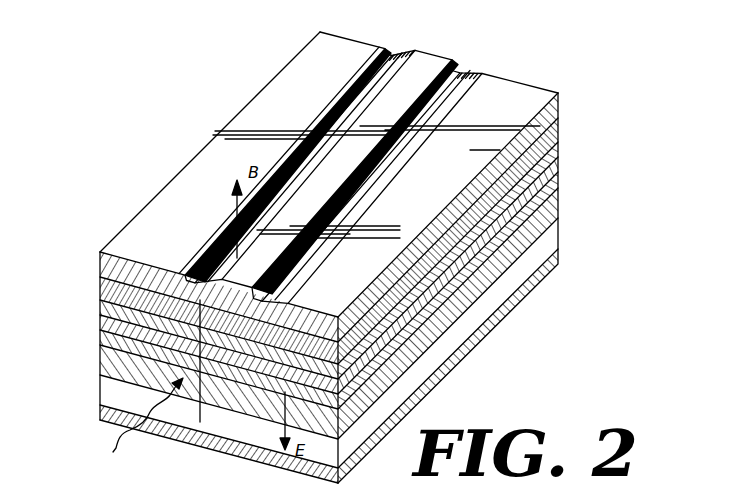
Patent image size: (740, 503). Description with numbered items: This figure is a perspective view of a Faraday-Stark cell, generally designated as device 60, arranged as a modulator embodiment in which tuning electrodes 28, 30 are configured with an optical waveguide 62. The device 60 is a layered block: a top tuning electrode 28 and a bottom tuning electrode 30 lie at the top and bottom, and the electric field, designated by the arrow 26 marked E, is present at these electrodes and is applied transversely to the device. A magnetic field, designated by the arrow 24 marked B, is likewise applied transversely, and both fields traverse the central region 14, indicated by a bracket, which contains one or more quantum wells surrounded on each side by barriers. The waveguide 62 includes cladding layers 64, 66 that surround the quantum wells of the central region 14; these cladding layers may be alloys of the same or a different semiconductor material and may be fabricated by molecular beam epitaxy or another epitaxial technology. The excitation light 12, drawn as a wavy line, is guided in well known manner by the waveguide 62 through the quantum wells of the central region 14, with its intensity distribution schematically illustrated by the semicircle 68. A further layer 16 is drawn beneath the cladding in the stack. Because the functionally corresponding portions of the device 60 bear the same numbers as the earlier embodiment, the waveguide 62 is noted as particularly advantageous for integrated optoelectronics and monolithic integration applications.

The excitation light 12 is at (73, 479).
The central region 14 is at (574, 132).
The substrate layer 16 is at (553, 243).
The magnetic field arrow 24 is at (236, 208).
The electric field arrow 26 is at (280, 426).
The top tuning electrode 28 is at (348, 38).
The bottom tuning electrode 30 is at (556, 272).
The device 60 is at (83, 386).
The waveguide 62 is at (99, 298).
The cladding layer 64 is at (557, 128).
The cladding layer 66 is at (556, 205).
The semicircle 68 is at (296, 282).